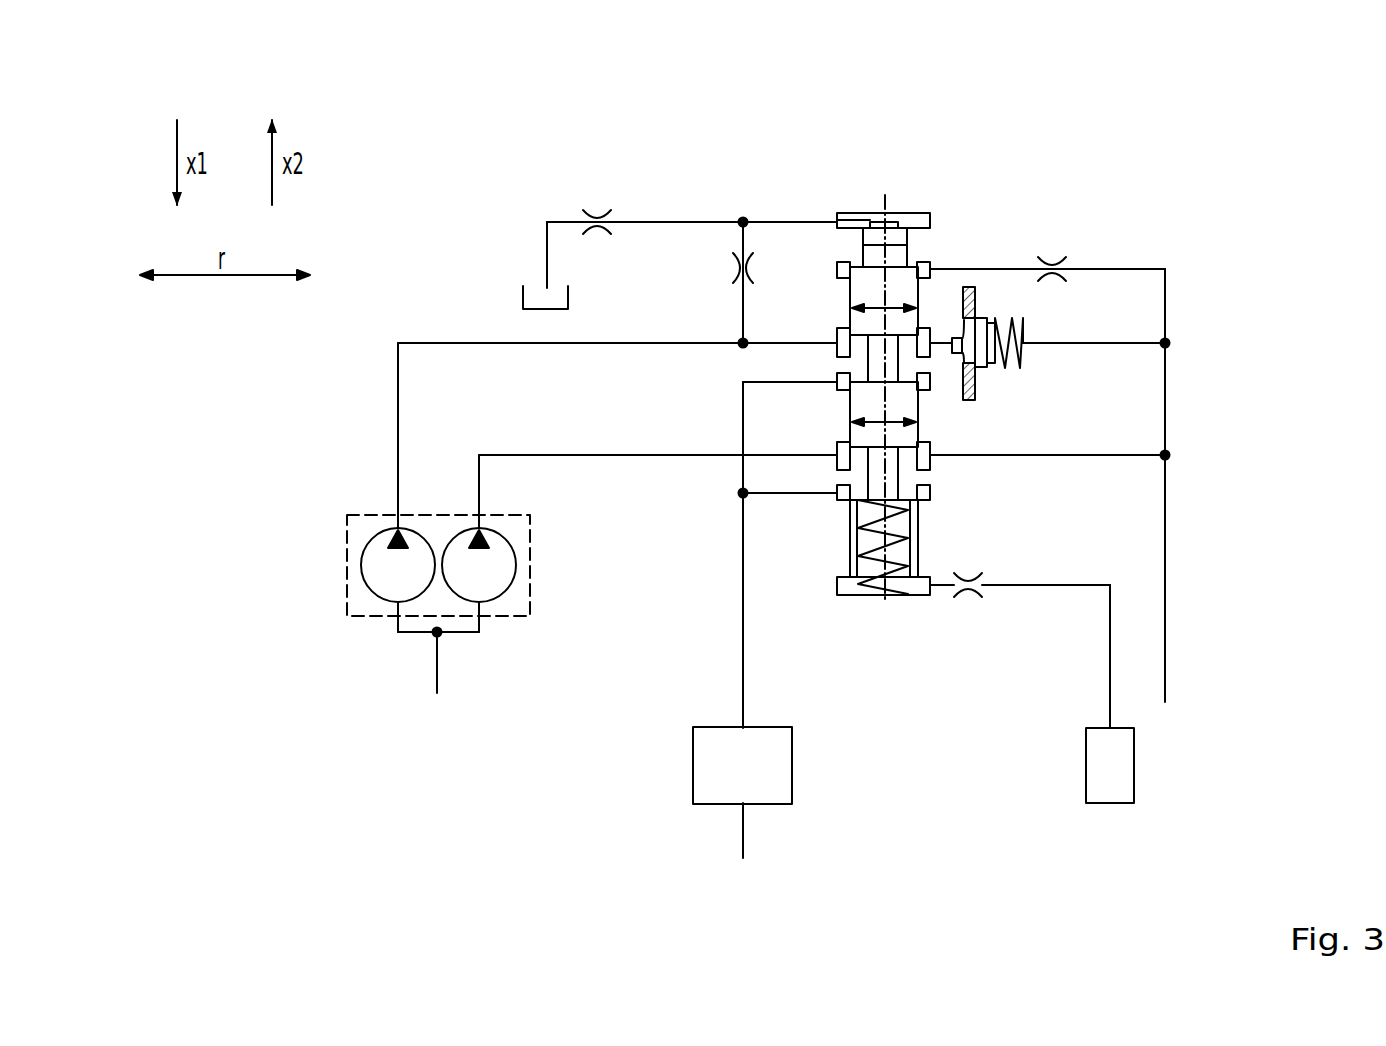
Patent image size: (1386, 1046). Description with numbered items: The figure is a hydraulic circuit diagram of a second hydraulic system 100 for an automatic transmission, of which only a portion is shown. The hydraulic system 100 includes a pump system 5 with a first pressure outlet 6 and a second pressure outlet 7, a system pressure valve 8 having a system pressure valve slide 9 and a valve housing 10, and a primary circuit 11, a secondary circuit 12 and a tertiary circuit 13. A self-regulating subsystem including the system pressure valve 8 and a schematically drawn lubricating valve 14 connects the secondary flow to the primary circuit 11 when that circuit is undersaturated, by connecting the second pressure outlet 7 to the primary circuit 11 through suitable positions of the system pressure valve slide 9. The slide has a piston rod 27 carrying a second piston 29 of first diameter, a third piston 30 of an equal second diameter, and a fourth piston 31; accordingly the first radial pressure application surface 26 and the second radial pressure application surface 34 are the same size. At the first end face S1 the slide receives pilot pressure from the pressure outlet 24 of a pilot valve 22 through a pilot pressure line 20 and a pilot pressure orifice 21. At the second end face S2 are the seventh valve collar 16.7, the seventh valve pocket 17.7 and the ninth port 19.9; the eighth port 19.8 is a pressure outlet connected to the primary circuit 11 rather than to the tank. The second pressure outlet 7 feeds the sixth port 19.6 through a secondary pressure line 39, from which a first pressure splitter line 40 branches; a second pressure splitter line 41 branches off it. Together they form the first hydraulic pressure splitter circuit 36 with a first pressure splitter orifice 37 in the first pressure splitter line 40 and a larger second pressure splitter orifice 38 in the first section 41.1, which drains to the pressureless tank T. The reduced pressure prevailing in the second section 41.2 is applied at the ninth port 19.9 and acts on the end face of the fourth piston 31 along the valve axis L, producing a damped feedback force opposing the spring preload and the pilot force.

The hydraulic system 100 is at (380, 163).
The pump system 5 is at (335, 575).
The first pressure outlet 6 is at (479, 515).
The second pressure outlet 7 is at (398, 515).
The system pressure valve 8 is at (918, 180).
The system pressure valve slide 9 is at (905, 463).
The valve housing 10 is at (930, 470).
The primary circuit 11 is at (1165, 428).
The secondary circuit 12 is at (742, 837).
The tertiary circuit 13 is at (437, 670).
The lubricating valve 14 is at (770, 787).
The seventh valve collar 16.7 is at (837, 235).
The seventh valve pocket 17.7 is at (850, 238).
The sixth port 19.6 is at (835, 343).
The eighth port 19.8 is at (931, 268).
The ninth port 19.9 is at (837, 223).
The pilot pressure line 20 is at (1003, 592).
The pilot pressure orifice 21 is at (980, 605).
The pilot valve 22 is at (743, 700).
The pressure outlet 24 is at (1112, 728).
The first radial pressure application surface 26 is at (975, 395).
The piston rod 27 is at (888, 470).
The second piston 29 is at (903, 432).
The third piston 30 is at (975, 300).
The fourth piston 31 is at (897, 240).
The second radial pressure application surface 34 is at (902, 322).
The first hydraulic pressure splitter circuit 36 is at (863, 242).
The first pressure splitter orifice 37 is at (730, 263).
The second pressure splitter orifice 38 is at (590, 208).
The secondary pressure line 39 is at (512, 341).
The first pressure splitter line 40 is at (743, 310).
The second pressure splitter line 41 is at (652, 210).
The first section 41.1 is at (627, 222).
The second section 41.2 is at (743, 220).
The first end face S1 is at (858, 605).
The second end face S2 is at (844, 209).
The pressureless tank T is at (523, 297).
The longitudinal axis L is at (885, 204).